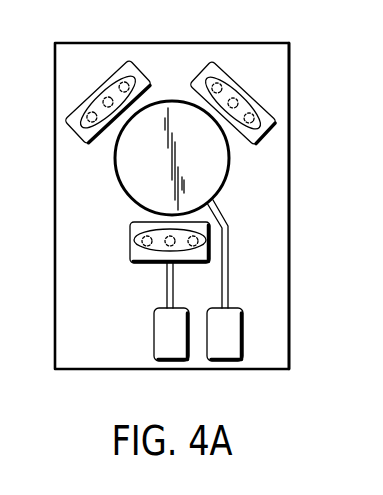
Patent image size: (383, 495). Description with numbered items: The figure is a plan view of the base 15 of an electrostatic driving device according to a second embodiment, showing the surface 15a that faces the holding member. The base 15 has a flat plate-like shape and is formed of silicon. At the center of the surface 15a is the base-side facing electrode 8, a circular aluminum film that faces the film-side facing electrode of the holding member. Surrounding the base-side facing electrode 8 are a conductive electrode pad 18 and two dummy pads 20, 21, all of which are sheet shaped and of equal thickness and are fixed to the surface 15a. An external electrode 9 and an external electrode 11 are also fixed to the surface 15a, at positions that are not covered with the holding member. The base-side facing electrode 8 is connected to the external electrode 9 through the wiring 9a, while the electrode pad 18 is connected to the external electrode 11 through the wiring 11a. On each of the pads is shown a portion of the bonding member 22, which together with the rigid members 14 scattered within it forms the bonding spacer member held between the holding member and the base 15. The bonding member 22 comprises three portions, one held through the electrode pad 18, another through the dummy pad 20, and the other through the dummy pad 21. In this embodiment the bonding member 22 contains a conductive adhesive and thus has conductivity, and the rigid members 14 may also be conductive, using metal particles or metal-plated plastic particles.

The base-side facing electrode 8 is at (215, 172).
The external electrode 9 is at (226, 345).
The wiring 9a is at (231, 252).
The external electrode 11 is at (166, 345).
The wiring 11a is at (167, 290).
The rigid members 14 is at (118, 83).
The base 15 is at (135, 43).
The surface 15a is at (280, 325).
The electrode pad 18 is at (142, 266).
The dummy pad 20 is at (88, 146).
The dummy pad 21 is at (268, 112).
The bonding member 22 is at (77, 119).